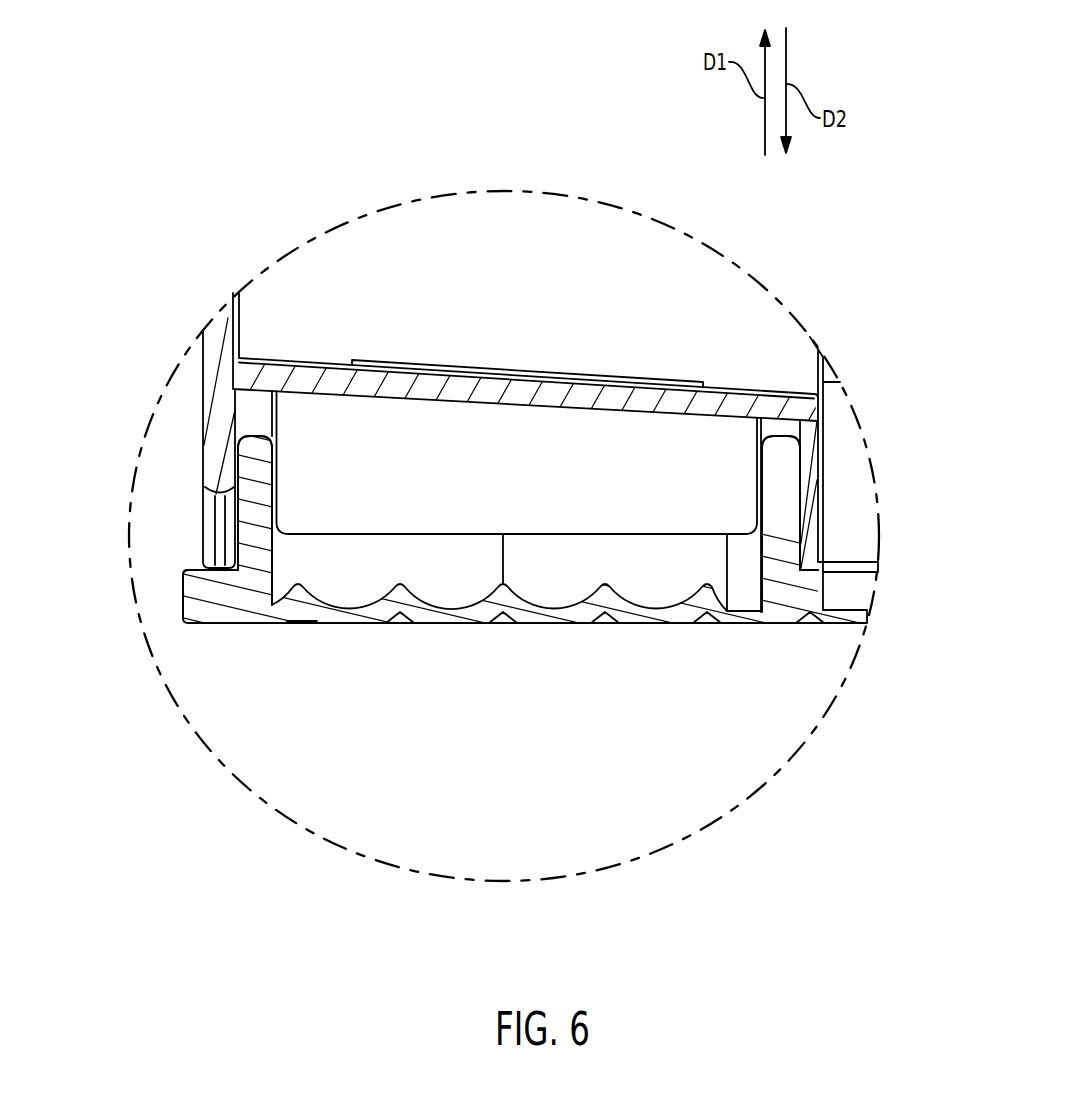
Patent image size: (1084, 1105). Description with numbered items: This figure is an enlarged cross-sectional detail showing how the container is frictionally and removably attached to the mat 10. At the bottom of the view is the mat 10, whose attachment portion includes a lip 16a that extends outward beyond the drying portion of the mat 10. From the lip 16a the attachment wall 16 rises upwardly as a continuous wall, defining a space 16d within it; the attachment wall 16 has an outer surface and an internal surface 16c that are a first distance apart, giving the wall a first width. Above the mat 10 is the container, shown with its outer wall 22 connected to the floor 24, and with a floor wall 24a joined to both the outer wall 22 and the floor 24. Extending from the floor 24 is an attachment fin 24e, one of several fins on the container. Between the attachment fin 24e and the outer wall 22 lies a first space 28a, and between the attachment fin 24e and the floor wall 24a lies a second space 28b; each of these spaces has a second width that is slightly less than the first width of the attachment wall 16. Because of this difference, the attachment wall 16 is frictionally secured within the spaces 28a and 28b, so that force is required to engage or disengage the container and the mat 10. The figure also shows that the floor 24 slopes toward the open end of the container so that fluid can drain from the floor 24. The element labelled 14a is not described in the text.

The mat 10 is at (651, 729).
The base of container body 14a is at (778, 643).
The attachment wall 16 is at (253, 537).
The lip 16a is at (192, 564).
The internal surface 16c is at (765, 472).
The space 16d is at (807, 551).
The outer wall 22 is at (223, 327).
The floor 24 is at (732, 402).
The floor wall 24a is at (815, 562).
The attachment fin 24e is at (580, 300).
The first space 28a is at (253, 408).
The second space 28b is at (783, 421).